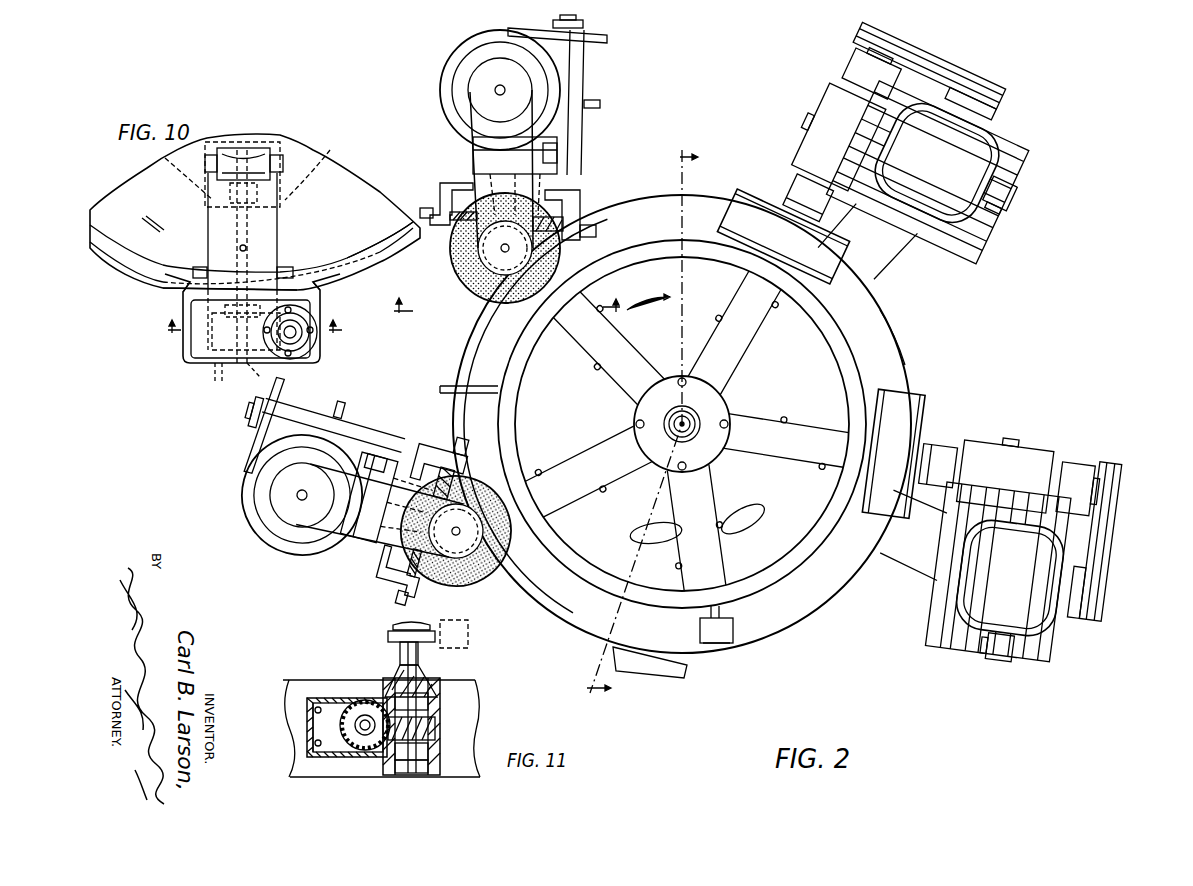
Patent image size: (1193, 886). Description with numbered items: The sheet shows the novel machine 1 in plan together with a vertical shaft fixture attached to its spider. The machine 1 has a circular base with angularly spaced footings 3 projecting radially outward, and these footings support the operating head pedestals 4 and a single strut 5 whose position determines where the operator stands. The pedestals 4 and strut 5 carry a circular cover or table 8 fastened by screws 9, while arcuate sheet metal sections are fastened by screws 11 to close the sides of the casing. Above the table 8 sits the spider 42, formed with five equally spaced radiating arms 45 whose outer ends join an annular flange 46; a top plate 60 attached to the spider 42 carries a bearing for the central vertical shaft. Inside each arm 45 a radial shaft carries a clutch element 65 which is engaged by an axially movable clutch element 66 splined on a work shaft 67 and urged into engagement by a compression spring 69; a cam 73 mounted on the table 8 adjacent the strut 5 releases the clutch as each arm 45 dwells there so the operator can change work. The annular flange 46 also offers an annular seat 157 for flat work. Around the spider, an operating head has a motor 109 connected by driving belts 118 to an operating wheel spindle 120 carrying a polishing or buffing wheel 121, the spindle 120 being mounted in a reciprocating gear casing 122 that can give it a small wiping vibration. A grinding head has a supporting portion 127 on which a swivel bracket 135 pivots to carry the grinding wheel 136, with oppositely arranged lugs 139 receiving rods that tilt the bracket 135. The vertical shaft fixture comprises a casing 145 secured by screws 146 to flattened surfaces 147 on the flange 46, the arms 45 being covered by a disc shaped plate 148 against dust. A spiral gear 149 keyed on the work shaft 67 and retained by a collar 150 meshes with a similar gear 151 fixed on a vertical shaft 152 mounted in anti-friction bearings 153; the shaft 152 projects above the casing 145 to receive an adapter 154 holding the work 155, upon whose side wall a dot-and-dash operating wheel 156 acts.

In FIG. 2, the machine 1 is at (535, 664).
In FIG. 2, the footings 3 is at (700, 673).
In FIG. 2, the operating head pedestals 4 is at (578, 178).
In FIG. 2, the strut 5 is at (672, 680).
In FIG. 2, the table 8 is at (466, 354).
In FIG. 2, the screws 9 is at (531, 313).
In FIG. 10, the screws 11 is at (250, 336).
In FIG. 2, the spider 42 is at (683, 380).
In FIG. 2, the radiating arms 45 is at (762, 412).
In FIG. 10, the radiating arms 45 is at (321, 170).
In FIG. 2, the annular flange 46 is at (463, 389).
In FIG. 10, the annular flange 46 is at (335, 282).
In FIG. 11, the annular flange 46 is at (460, 768).
In FIG. 2, the top plate 60 is at (712, 455).
In FIG. 10, the clutch elements 65 is at (263, 150).
In FIG. 10, the movable clutch elements 66 is at (300, 155).
In FIG. 10, the work shafts 67 is at (255, 233).
In FIG. 10, the compression springs 69 is at (180, 171).
In FIG. 2, the cam 73 is at (648, 528).
In FIG. 2, the motor 109 is at (995, 150).
In FIG. 2, the driving belts 118 is at (935, 63).
In FIG. 2, the operating wheel spindle 120 is at (828, 283).
In FIG. 2, the operating wheel 121 is at (737, 200).
In FIG. 2, the reciprocating gear casing 122 is at (827, 89).
In FIG. 2, the supporting portion 127 is at (472, 165).
In FIG. 2, the swivel bracket 135 is at (483, 195).
In FIG. 2, the operating wheel 136 is at (458, 265).
In FIG. 2, the lugs 139 is at (440, 190).
In FIG. 10, the casing 145 is at (200, 365).
In FIG. 11, the casing 145 is at (340, 757).
In FIG. 10, the screws 146 is at (170, 283).
In FIG. 11, the screws 146 is at (310, 742).
In FIG. 2, the flattened surfaces 147 is at (747, 640).
In FIG. 10, the flattened surfaces 147 is at (183, 330).
In FIG. 11, the flattened surfaces 147 is at (317, 687).
In FIG. 10, the disc shaped plate 148 is at (150, 172).
In FIG. 10, the spiral gears 149 is at (195, 345).
In FIG. 11, the spiral gears 149 is at (347, 700).
In FIG. 10, the collars 150 is at (218, 365).
In FIG. 11, the gear 151 is at (440, 718).
In FIG. 10, the vertical shaft 152 is at (315, 348).
In FIG. 11, the vertical shaft 152 is at (400, 675).
In FIG. 11, the anti-friction bearings 153 is at (433, 700).
In FIG. 11, the adapter 154 is at (400, 667).
In FIG. 11, the work 155 is at (398, 633).
In FIG. 11, the operating wheel 156 is at (470, 641).
In FIG. 2, the annular seat 157 is at (893, 350).
In FIG. 10, the annular seat 157 is at (368, 252).